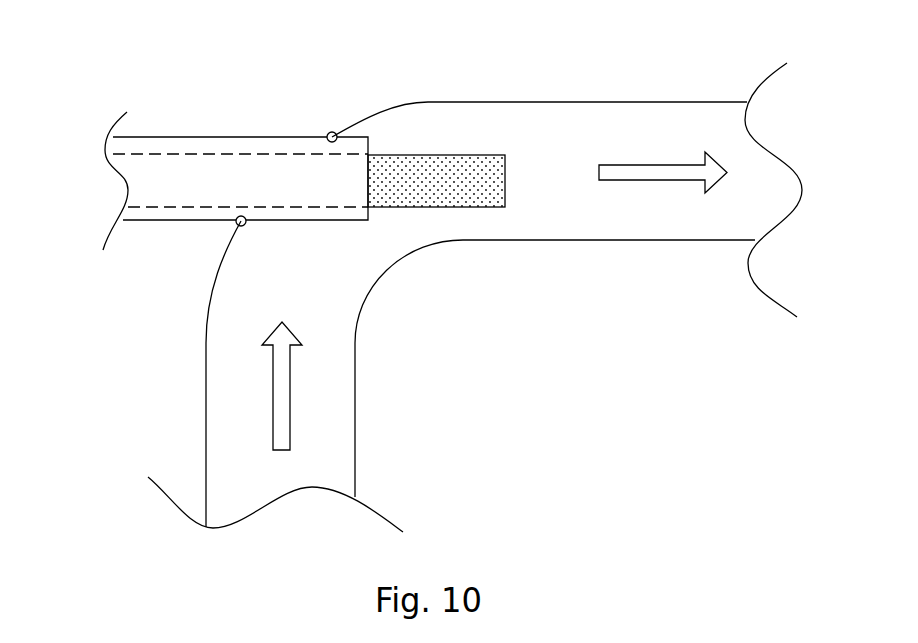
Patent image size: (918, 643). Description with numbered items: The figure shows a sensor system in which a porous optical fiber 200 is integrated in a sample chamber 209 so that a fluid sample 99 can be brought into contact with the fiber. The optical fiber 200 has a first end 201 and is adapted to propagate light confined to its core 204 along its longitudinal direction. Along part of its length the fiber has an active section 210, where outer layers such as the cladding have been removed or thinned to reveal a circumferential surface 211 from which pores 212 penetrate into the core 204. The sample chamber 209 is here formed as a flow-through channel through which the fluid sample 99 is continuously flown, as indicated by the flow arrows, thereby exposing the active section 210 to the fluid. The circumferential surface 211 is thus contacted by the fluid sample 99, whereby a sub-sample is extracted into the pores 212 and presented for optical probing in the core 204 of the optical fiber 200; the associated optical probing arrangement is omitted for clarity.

The fluid sample 99 is at (645, 162).
The optical fiber 200 is at (329, 196).
The first end 201 is at (90, 181).
The core 204 is at (247, 170).
The sample chamber 209 is at (342, 298).
The active section 210 is at (408, 165).
The circumferential surface 211 is at (422, 153).
The pores 212 is at (463, 170).